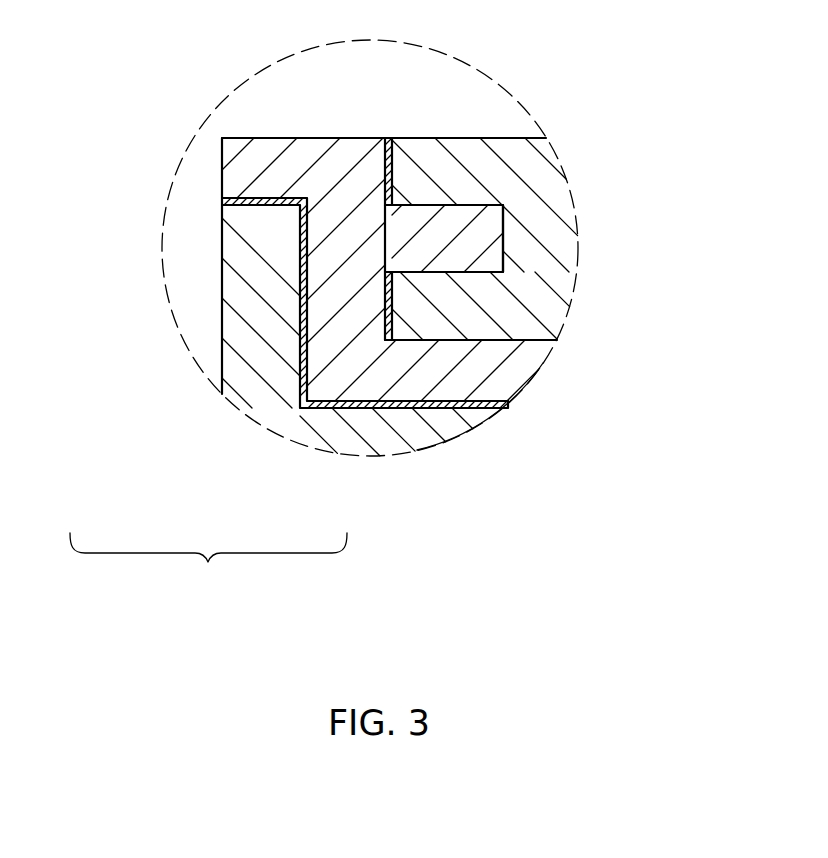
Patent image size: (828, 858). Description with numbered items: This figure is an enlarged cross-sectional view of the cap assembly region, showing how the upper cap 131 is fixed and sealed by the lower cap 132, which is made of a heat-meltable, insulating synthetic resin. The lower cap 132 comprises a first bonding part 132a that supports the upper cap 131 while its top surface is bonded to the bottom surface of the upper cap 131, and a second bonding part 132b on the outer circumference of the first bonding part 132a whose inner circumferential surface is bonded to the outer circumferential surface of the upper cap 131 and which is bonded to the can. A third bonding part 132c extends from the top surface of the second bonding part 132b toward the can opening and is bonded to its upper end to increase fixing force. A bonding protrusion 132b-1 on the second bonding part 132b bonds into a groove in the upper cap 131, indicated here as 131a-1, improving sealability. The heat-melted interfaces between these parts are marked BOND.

The upper cap 131 is at (543, 169).
The groove of housing 131a-1 is at (437, 205).
The lower cap 132 is at (208, 563).
The first bonding part 132a is at (430, 383).
The second bonding part 132b is at (325, 308).
The bonding protrusion 132b-1 is at (497, 233).
The third bonding part 132c is at (222, 171).
The bond layers BOND is at (343, 400).